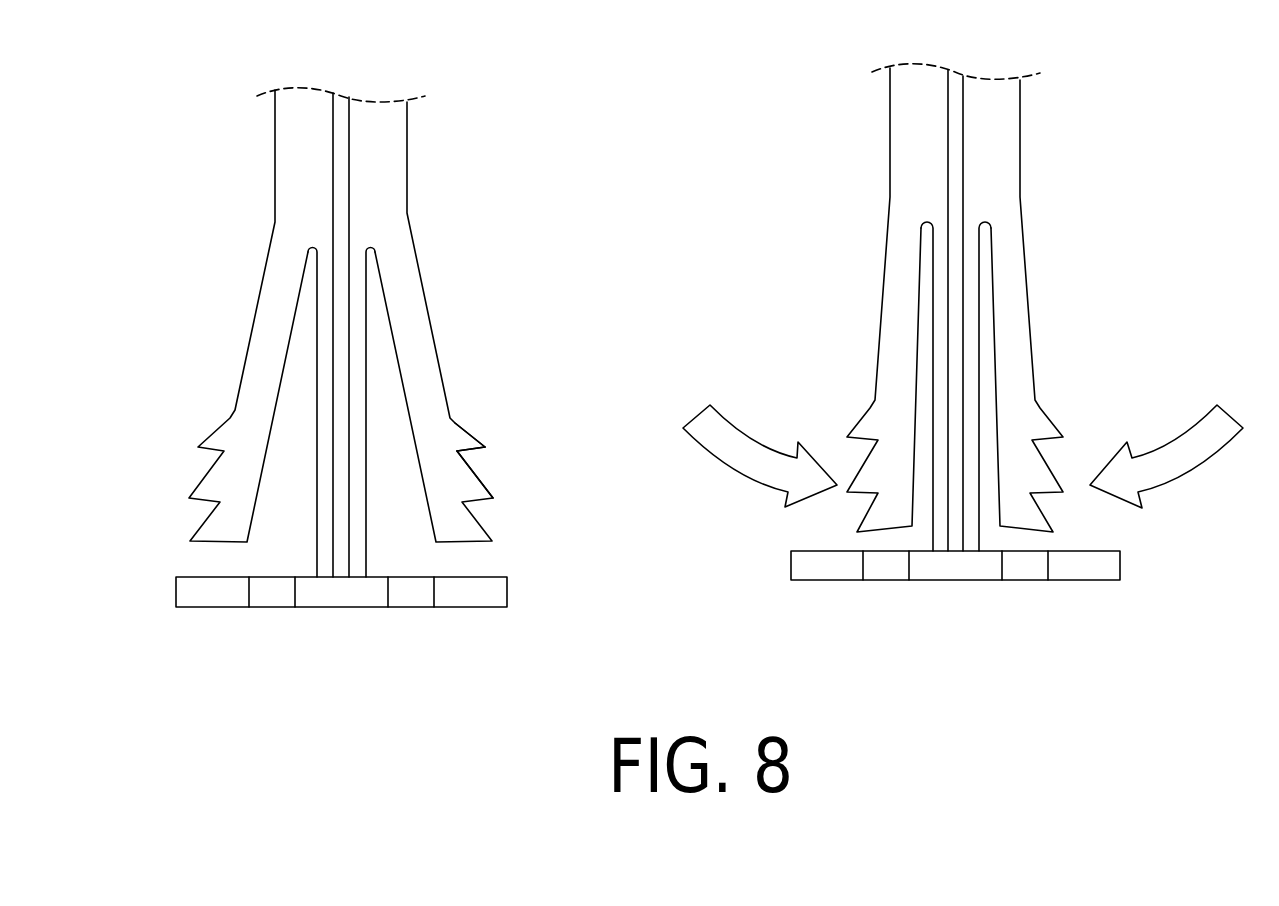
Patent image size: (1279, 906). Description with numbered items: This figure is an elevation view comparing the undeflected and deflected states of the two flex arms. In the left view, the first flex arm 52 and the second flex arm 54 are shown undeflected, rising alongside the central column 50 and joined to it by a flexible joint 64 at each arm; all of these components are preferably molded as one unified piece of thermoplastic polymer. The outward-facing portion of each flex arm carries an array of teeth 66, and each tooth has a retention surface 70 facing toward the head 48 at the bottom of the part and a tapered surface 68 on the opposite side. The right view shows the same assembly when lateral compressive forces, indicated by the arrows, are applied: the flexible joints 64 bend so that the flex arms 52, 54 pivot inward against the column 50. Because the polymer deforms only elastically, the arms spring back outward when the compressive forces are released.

The head 48 is at (325, 600).
The column 50 is at (382, 120).
The first flex arm 52 is at (262, 337).
The second flex arm 54 is at (427, 318).
The flexible joint 64 is at (293, 245).
The teeth 66 is at (485, 448).
The tapered surface 68 is at (468, 430).
The retention surface 70 is at (473, 450).